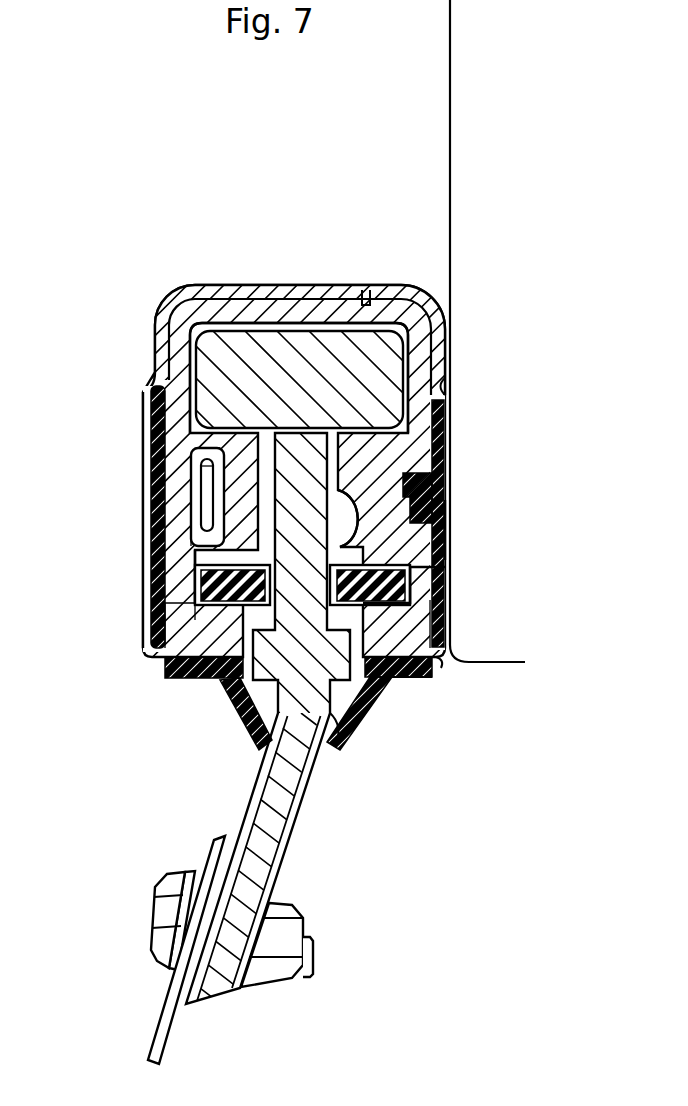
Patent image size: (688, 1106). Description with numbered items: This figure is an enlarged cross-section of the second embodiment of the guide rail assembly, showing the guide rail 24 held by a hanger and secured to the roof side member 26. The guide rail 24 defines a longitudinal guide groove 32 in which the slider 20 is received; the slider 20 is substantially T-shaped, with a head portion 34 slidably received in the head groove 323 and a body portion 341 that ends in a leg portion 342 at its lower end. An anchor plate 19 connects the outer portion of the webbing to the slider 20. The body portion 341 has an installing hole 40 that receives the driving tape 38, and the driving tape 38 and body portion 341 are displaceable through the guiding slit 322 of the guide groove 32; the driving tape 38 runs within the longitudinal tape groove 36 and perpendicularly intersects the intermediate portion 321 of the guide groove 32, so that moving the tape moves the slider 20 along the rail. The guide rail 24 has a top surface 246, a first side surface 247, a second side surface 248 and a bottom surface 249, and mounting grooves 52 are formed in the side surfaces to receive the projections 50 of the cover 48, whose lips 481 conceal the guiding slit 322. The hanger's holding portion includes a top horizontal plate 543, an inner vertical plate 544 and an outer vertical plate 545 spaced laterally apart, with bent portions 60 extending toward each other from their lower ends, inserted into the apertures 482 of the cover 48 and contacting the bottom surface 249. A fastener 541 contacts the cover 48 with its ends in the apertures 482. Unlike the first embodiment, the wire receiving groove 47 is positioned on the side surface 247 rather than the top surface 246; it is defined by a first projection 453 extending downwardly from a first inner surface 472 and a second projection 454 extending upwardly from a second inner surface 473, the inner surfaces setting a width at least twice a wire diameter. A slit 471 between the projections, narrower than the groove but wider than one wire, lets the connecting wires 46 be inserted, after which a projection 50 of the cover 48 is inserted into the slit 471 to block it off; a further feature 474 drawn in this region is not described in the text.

The anchor plate 19 is at (160, 1028).
The slider 20 is at (273, 851).
The guide rail 24 is at (178, 333).
The roof side member 26 is at (495, 648).
The guide groove 32 is at (444, 506).
The head portion 34 is at (386, 373).
The tape groove 36 is at (407, 575).
The driving tape 38 is at (407, 590).
The installing hole 40 is at (375, 634).
The connecting wires 46 is at (196, 576).
The wire receiving groove 47 is at (196, 526).
The cover 48 is at (150, 630).
The projection 50 is at (157, 506).
The mounting grooves 52 is at (440, 497).
The bent portions 60 is at (212, 662).
The top surface 246 is at (367, 305).
The side surface 247 is at (160, 375).
The second side surface 248 is at (436, 470).
The bottom surface 249 is at (437, 670).
The intermediate portion 321 is at (180, 618).
The guiding slit 322 is at (383, 687).
The head groove 323 is at (432, 322).
The body portion 341 is at (322, 550).
The leg portion 342 is at (223, 995).
The first projection 453 is at (205, 466).
The second projection 454 is at (196, 540).
The slit 471 is at (203, 490).
The first inner surface 472 is at (200, 460).
The second inner surface 473 is at (196, 595).
The upper wall 474 is at (212, 448).
The lips 481 is at (343, 722).
The apertures 482 is at (439, 666).
The fastener 541 is at (207, 283).
The top horizontal plate 543 is at (303, 287).
The inner vertical plate 544 is at (157, 498).
The outer vertical plate 545 is at (436, 478).